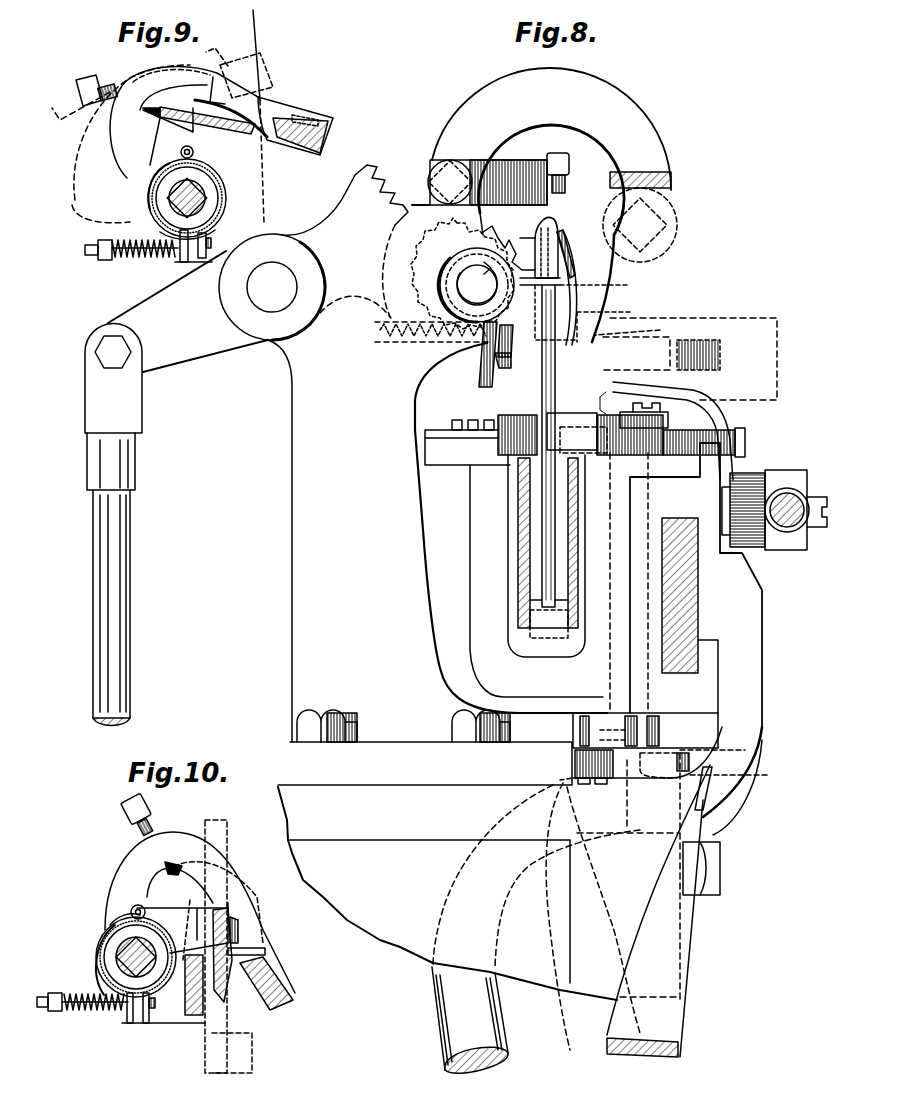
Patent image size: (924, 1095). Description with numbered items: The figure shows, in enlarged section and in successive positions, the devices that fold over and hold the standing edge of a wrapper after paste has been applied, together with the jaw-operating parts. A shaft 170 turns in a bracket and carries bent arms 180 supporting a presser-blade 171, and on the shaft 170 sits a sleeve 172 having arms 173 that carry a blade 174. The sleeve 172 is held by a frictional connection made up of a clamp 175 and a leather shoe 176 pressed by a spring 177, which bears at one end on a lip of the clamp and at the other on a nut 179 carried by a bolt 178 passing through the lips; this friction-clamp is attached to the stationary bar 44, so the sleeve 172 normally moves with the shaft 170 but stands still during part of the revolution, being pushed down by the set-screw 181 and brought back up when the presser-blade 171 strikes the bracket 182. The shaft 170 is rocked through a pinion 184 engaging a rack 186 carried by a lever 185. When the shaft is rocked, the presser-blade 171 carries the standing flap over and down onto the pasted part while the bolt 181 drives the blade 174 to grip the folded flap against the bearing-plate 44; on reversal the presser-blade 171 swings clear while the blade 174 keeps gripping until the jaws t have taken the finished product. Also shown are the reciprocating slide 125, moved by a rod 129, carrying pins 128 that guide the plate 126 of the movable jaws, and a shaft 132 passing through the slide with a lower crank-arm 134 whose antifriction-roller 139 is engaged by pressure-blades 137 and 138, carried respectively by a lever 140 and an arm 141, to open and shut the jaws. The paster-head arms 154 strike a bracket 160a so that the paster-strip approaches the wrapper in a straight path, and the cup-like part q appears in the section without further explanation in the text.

In FIG. 8, the stationary bar 44 is at (490, 360).
In FIG. 10, the stationary bar 44 is at (206, 1010).
In FIG. 8, the cylinder cup q is at (520, 508).
In FIG. 8, the jaws t is at (604, 405).
In FIG. 8, the reciprocating slide 125 is at (508, 585).
In FIG. 8, the plate 126 is at (748, 440).
In FIG. 8, the pin 128 is at (647, 405).
In FIG. 8, the rod 129 is at (787, 552).
In FIG. 8, the shaft 132 is at (607, 683).
In FIG. 8, the crank-arm 134 is at (625, 730).
In FIG. 8, the pressure-blade 137 is at (570, 767).
In FIG. 8, the pressure-blade 138 is at (686, 752).
In FIG. 8, the antifriction-roller 139 is at (593, 780).
In FIG. 8, the lever 140 is at (685, 1012).
In FIG. 8, the arm 141 is at (536, 929).
In FIG. 8, the arms 154 is at (705, 318).
In FIG. 8, the bracket 160a is at (706, 398).
In FIG. 9, the shaft 170 is at (165, 196).
In FIG. 8, the shaft 170 is at (476, 285).
In FIG. 10, the shaft 170 is at (102, 968).
In FIG. 9, the presser-blade 171 is at (324, 135).
In FIG. 8, the presser-blade 171 is at (553, 380).
In FIG. 10, the presser-blade 171 is at (290, 1003).
In FIG. 9, the sleeve 172 is at (202, 187).
In FIG. 10, the sleeve 172 is at (105, 948).
In FIG. 9, the arms 173 is at (152, 126).
In FIG. 10, the arms 173 is at (213, 905).
In FIG. 9, the blade 174 is at (225, 134).
In FIG. 8, the blade 174 is at (565, 238).
In FIG. 10, the blade 174 is at (236, 918).
In FIG. 9, the clamp 175 is at (199, 162).
In FIG. 10, the clamp 175 is at (150, 938).
In FIG. 9, the leather shoe 176 is at (208, 227).
In FIG. 10, the leather shoe 176 is at (110, 928).
In FIG. 9, the spring 177 is at (148, 258).
In FIG. 8, the spring 177 is at (430, 352).
In FIG. 10, the spring 177 is at (120, 1015).
In FIG. 9, the bolt 178 is at (200, 262).
In FIG. 10, the bolt 178 is at (153, 1025).
In FIG. 9, the nut 179 is at (100, 238).
In FIG. 8, the nut 179 is at (380, 340).
In FIG. 10, the nut 179 is at (60, 1012).
In FIG. 9, the bent arms 180 is at (159, 116).
In FIG. 8, the bent arms 180 is at (605, 270).
In FIG. 10, the bent arms 180 is at (200, 912).
In FIG. 9, the set-screw 181 is at (82, 86).
In FIG. 8, the set-screw 181 is at (572, 165).
In FIG. 10, the set-screw 181 is at (124, 803).
In FIG. 9, the bracket 182 is at (235, 60).
In FIG. 10, the bracket 182 is at (265, 950).
In FIG. 8, the pinion 184 is at (473, 267).
In FIG. 8, the lever 185 is at (216, 466).
In FIG. 8, the rack 186 is at (412, 205).